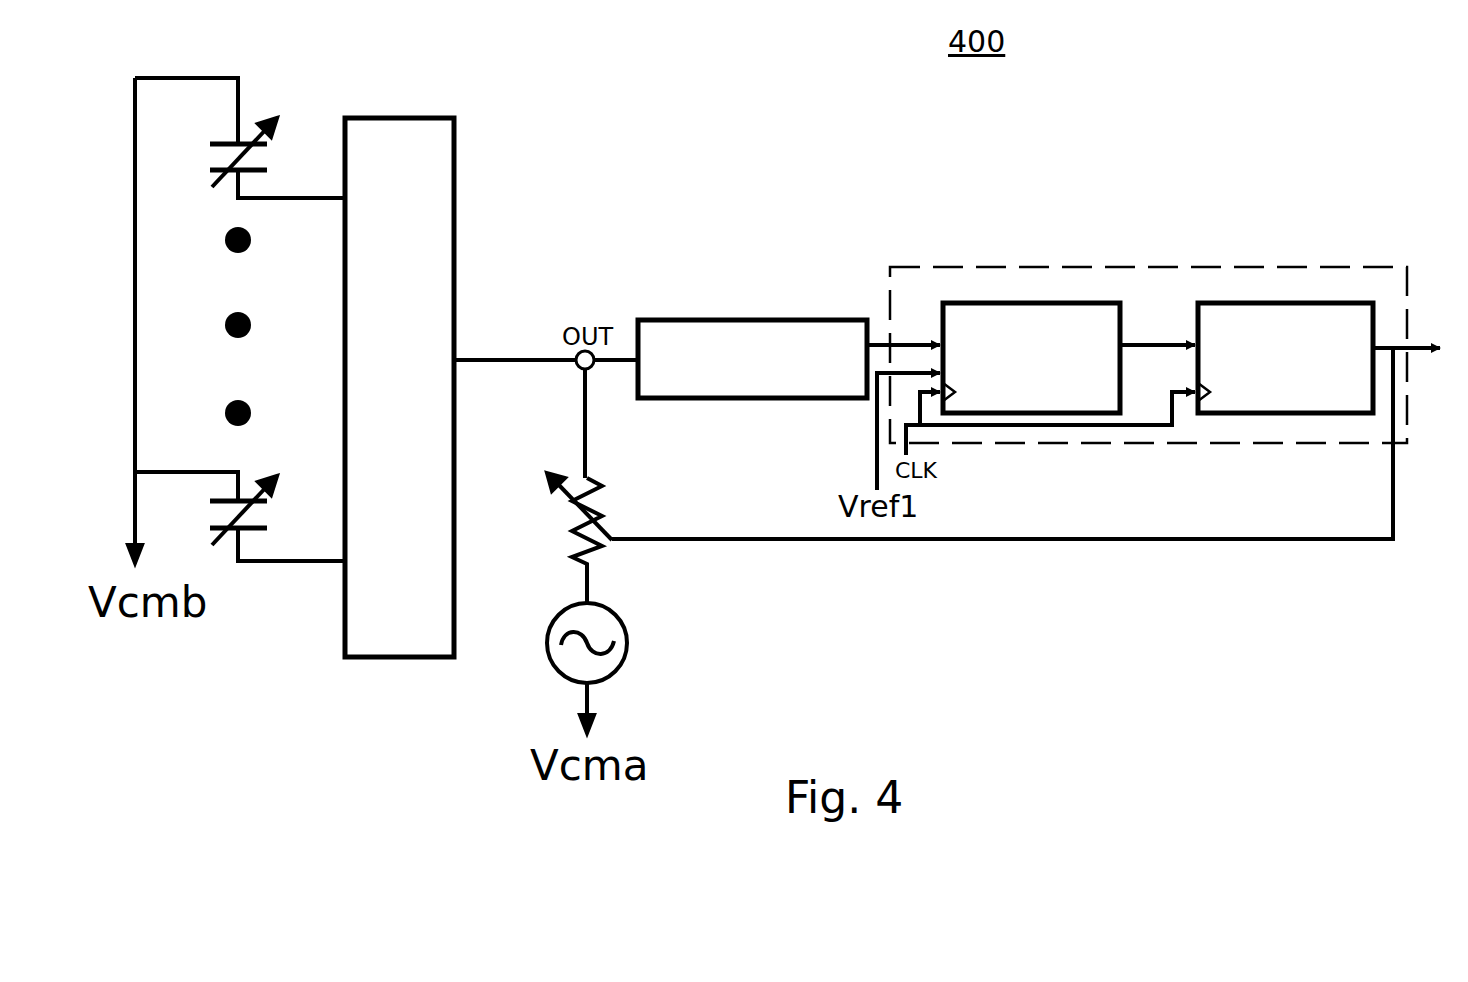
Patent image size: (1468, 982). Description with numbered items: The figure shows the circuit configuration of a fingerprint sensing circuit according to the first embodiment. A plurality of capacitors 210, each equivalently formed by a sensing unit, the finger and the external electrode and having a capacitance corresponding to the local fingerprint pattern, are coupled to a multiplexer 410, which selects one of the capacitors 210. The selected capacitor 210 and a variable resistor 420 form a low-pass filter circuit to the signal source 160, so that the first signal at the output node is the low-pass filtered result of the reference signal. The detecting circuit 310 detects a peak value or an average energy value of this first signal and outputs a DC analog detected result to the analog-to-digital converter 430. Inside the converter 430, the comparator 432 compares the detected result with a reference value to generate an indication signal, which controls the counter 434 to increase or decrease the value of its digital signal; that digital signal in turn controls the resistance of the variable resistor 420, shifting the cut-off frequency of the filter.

The signal source 160 is at (627, 640).
The capacitor 210 is at (257, 112).
The detecting circuit 310 is at (735, 320).
The multiplexer 410 is at (454, 135).
The variable resistor 420 is at (613, 493).
The analog-to-digital converter 430 is at (1170, 267).
The comparator 432 is at (1003, 303).
The counter 434 is at (1305, 303).